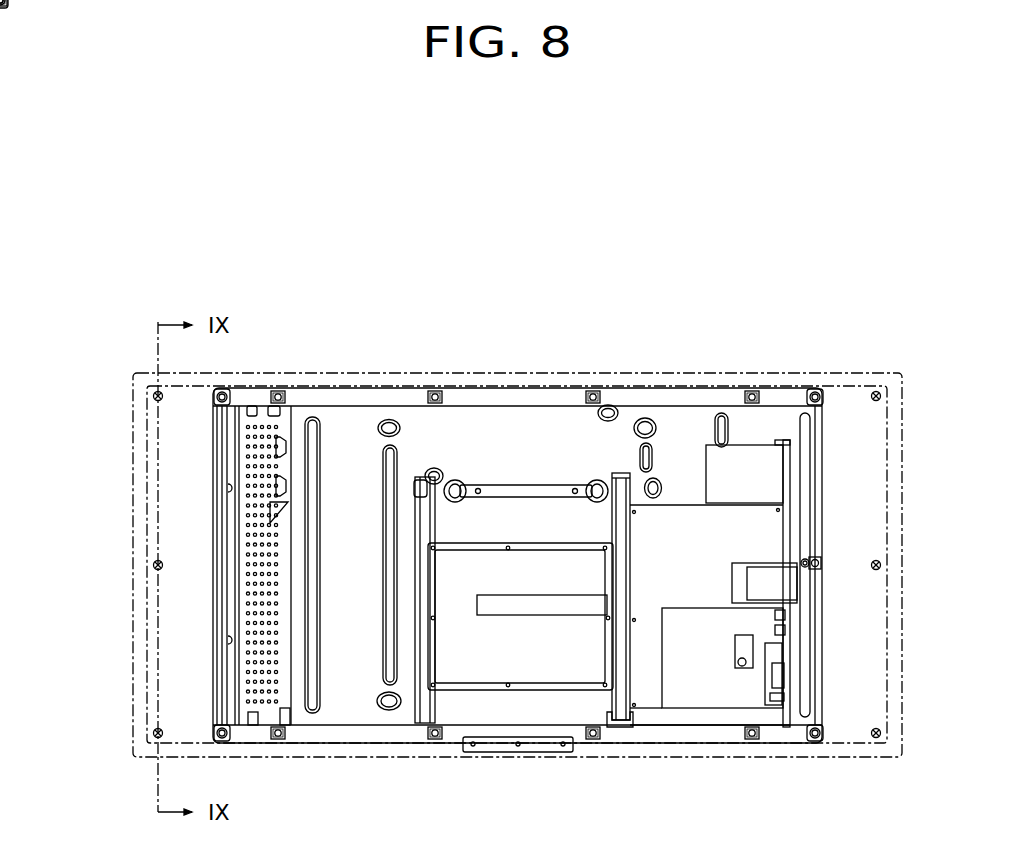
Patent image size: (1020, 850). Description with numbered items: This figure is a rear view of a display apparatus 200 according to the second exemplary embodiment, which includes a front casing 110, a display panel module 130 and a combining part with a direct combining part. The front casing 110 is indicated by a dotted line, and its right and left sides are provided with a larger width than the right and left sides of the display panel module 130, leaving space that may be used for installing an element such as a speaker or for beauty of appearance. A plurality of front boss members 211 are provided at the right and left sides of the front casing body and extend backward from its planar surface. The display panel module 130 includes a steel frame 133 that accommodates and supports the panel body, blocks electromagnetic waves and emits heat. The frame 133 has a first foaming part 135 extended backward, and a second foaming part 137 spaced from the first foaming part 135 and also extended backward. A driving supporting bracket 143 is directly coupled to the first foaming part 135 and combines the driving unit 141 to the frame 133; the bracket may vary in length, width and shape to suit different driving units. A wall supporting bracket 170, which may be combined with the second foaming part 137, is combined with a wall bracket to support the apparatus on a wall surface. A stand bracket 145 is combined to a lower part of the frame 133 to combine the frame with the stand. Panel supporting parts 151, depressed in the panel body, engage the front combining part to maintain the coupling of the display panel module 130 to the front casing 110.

The display apparatus 200 is at (193, 251).
The front casing 110 is at (138, 401).
The front boss member 211 is at (155, 400).
The display panel module 130 is at (634, 402).
The frame 133 is at (690, 428).
The panel supporting part 151 is at (283, 389).
The first foaming part 135 is at (413, 468).
The second foaming part 137 is at (453, 470).
The wall supporting bracket 170 is at (538, 490).
The driving supporting bracket 143 is at (620, 603).
The driving unit 141 is at (553, 658).
The stand bracket 145 is at (545, 742).